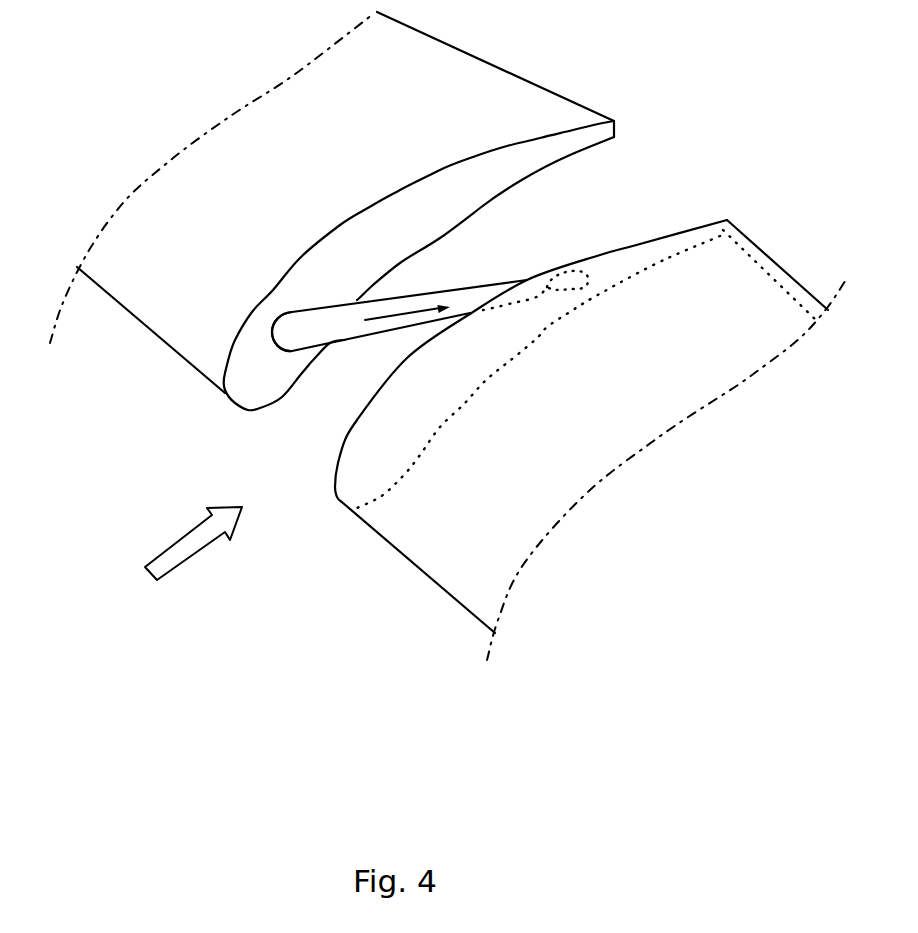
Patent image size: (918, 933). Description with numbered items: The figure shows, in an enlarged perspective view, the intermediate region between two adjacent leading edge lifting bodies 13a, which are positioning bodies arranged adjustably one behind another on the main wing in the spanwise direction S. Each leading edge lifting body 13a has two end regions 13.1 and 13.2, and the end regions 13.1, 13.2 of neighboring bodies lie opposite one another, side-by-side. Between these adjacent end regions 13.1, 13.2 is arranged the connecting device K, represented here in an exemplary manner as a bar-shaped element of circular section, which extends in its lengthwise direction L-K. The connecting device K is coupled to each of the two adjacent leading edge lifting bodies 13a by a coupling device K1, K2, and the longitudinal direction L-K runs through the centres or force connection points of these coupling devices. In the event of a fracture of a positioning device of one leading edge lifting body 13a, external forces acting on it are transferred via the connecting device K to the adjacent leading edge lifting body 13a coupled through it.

The end region 13.1 is at (562, 123).
The end region 13.2 is at (737, 263).
The leading edge lifting body 13a is at (198, 163).
The connecting device K is at (355, 327).
The coupling device K1 is at (295, 338).
The coupling device K2 is at (557, 283).
The longitudinal direction L-K is at (398, 313).
The spanwise direction S is at (192, 540).